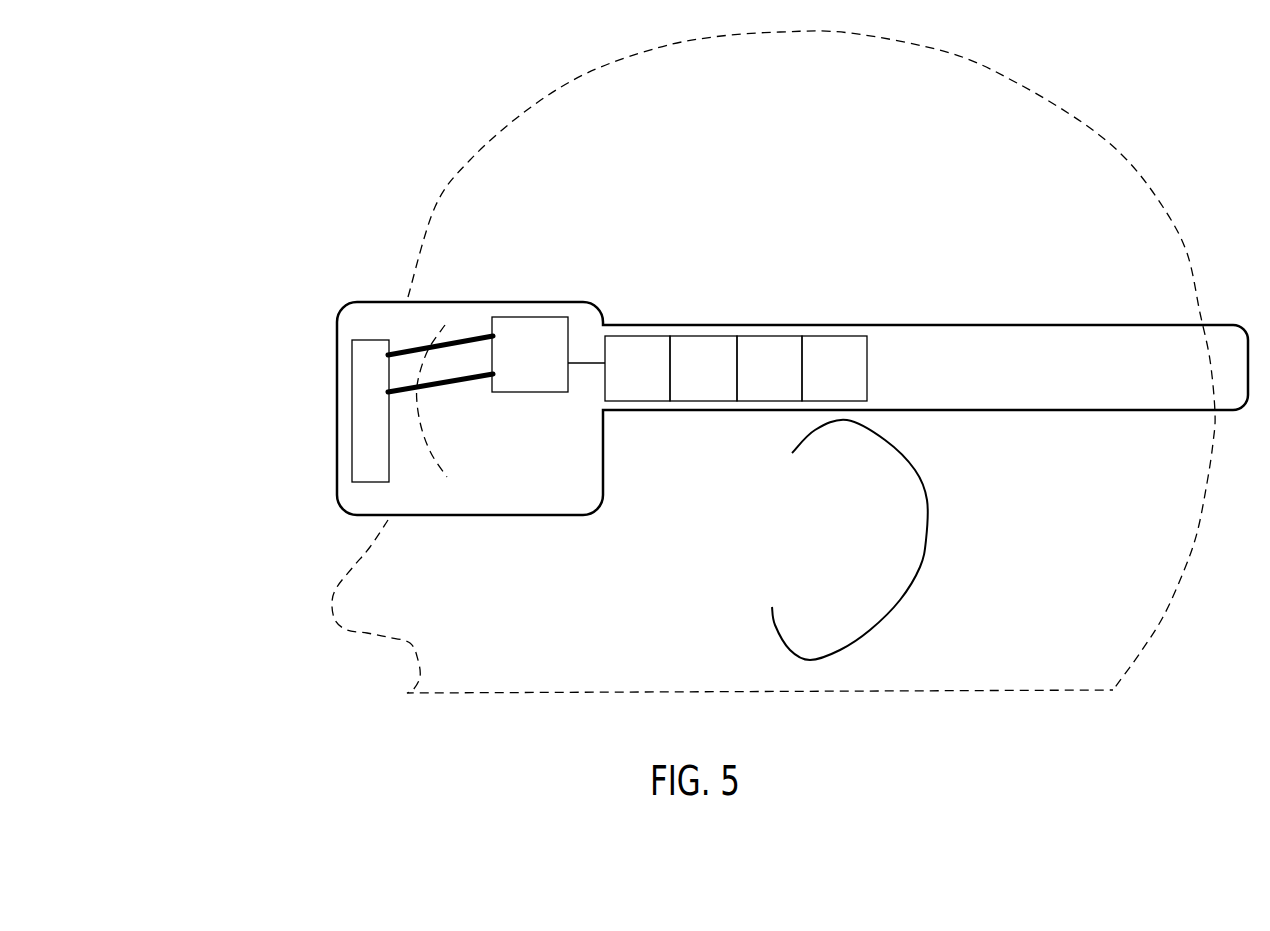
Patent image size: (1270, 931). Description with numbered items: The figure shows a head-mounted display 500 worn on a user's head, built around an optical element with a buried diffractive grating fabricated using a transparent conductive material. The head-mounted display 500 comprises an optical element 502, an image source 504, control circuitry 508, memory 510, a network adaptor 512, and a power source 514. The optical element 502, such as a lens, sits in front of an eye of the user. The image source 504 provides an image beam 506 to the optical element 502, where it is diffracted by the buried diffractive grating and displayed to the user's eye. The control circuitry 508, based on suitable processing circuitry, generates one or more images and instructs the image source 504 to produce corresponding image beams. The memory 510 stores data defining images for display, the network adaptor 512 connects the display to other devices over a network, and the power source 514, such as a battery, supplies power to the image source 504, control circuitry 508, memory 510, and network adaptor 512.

The head-mounted display 500 is at (262, 157).
The optical element 502 is at (362, 343).
The image source 504 is at (538, 317).
The image beam 506 is at (433, 342).
The control circuitry 508 is at (640, 336).
The memory 510 is at (703, 336).
The network adaptor 512 is at (763, 336).
The power source 514 is at (827, 336).